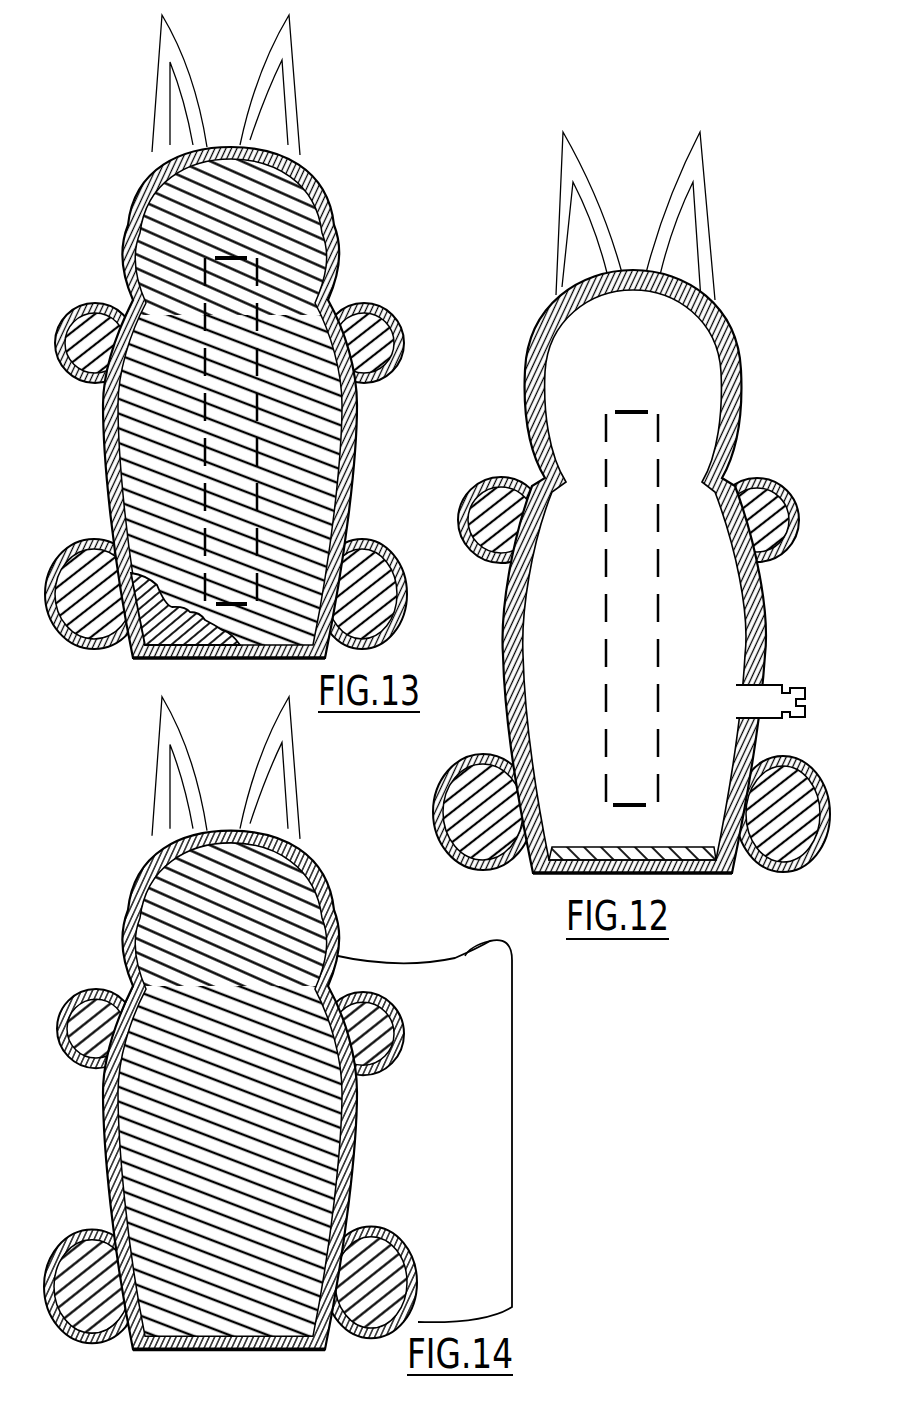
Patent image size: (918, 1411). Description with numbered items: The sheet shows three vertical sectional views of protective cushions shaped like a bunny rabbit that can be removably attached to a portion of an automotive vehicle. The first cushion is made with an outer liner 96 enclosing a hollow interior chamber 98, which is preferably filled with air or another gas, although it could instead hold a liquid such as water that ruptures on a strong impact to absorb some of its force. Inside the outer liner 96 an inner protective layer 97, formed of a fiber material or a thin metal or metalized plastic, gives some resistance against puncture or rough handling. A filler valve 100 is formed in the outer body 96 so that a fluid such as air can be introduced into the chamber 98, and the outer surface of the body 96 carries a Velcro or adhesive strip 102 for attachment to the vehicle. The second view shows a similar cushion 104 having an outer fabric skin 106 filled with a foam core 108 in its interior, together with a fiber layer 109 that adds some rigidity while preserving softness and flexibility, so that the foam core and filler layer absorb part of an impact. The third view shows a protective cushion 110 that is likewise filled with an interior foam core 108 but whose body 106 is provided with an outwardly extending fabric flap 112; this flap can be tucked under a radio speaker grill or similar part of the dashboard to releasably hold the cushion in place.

In FIG. 12, the outer liner 96 is at (735, 418).
In FIG. 12, the inner protective layer 97 is at (727, 377).
In FIG. 12, the hollow interior chamber 98 is at (672, 355).
In FIG. 12, the filler valve 100 is at (806, 702).
In FIG. 12, the adhesive strip 102 is at (624, 672).
In FIG. 13, the cushion 104 is at (333, 208).
In FIG. 13, the fabric skin 106 is at (350, 465).
In FIG. 14, the fabric skin 106 is at (279, 1090).
In FIG. 13, the foam core 108 is at (325, 410).
In FIG. 14, the foam core 108 is at (177, 1089).
In FIG. 13, the fiber layer 109 is at (140, 657).
In FIG. 14, the protective cushion 110 is at (254, 1090).
In FIG. 14, the fabric flap 112 is at (512, 1112).